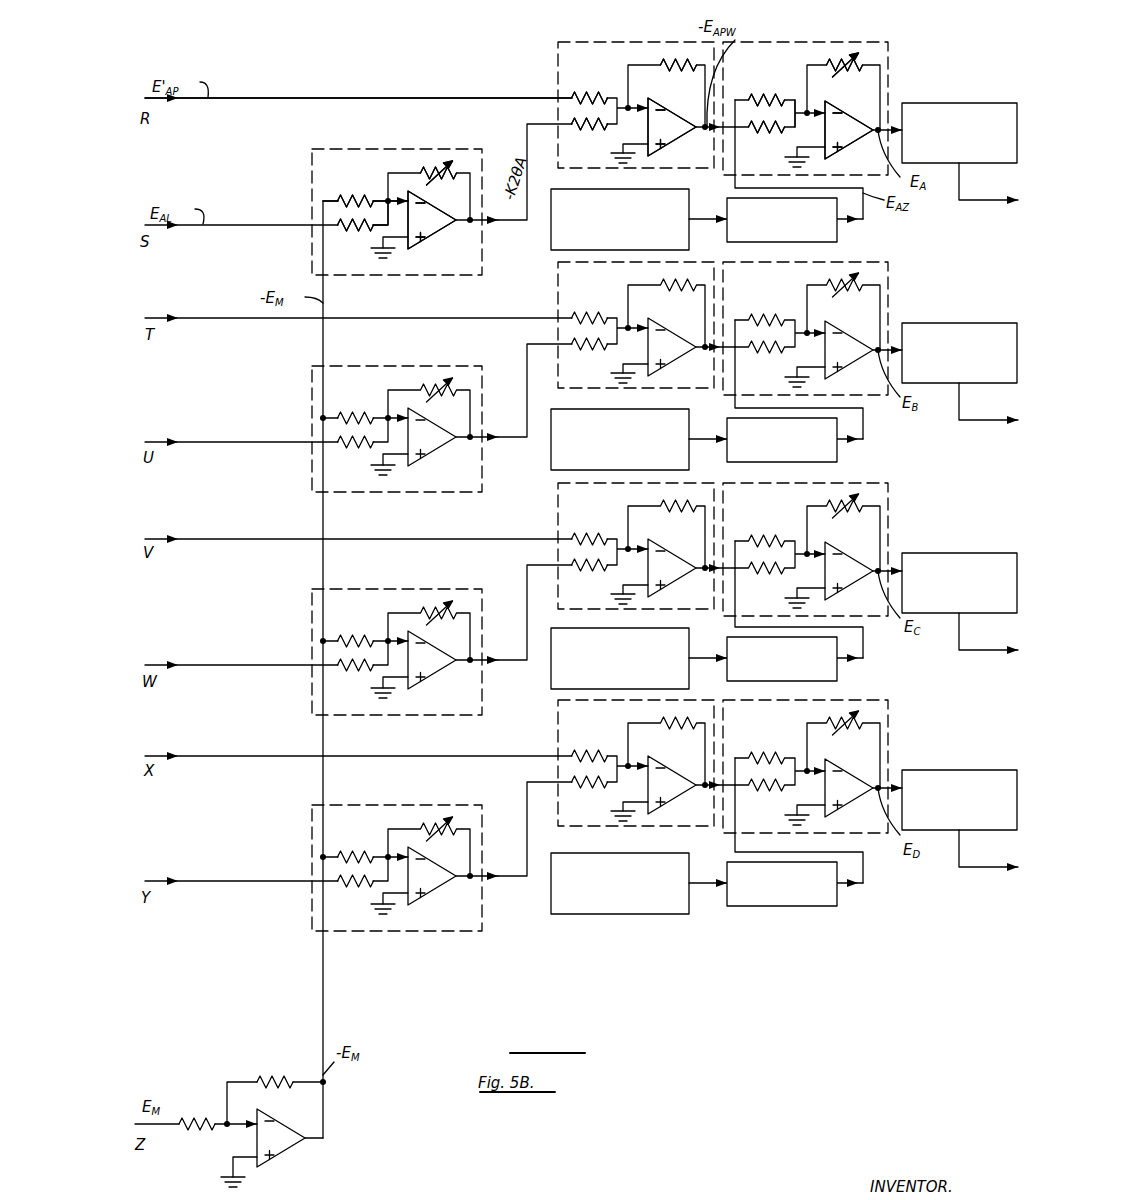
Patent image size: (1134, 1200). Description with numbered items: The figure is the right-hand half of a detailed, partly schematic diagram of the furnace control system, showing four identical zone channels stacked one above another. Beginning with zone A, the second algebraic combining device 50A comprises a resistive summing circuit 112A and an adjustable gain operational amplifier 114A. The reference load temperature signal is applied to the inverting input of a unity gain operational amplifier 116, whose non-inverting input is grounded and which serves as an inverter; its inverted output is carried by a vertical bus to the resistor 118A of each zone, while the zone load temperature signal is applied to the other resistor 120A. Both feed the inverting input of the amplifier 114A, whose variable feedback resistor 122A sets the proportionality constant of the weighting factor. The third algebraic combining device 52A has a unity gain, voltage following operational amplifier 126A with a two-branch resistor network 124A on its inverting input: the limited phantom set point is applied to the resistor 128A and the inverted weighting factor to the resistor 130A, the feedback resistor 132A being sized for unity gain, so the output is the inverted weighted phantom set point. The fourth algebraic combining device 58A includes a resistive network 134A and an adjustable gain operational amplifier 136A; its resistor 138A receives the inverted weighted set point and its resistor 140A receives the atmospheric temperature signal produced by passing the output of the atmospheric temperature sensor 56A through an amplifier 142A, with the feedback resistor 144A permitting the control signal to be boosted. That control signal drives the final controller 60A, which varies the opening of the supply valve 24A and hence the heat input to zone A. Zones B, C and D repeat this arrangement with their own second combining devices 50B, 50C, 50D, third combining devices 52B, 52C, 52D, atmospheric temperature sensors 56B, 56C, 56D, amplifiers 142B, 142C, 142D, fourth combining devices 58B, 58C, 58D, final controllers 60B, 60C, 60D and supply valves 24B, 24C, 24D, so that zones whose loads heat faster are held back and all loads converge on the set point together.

The second algebraic combining device 50A is at (363, 146).
The second algebraic combining device 50B is at (412, 363).
The second algebraic combining device 50C is at (416, 585).
The second algebraic combining device 50D is at (410, 801).
The third algebraic combining device 52A is at (605, 38).
The third algebraic combining device 52B is at (558, 306).
The third algebraic combining device 52C is at (557, 519).
The third algebraic combining device 52D is at (558, 734).
The atmospheric temperature sensor 56A is at (551, 233).
The atmospheric temperature sensor 56B is at (551, 455).
The atmospheric temperature sensor 56C is at (548, 682).
The atmospheric temperature sensor 56D is at (585, 914).
The fourth algebraic combining device 58A is at (865, 44).
The fourth algebraic combining device 58B is at (877, 302).
The fourth algebraic combining device 58C is at (877, 517).
The fourth algebraic combining device 58D is at (869, 742).
The final controller 60A is at (990, 86).
The final controller 60B is at (932, 318).
The final controller 60C is at (932, 544).
The final controller 60D is at (930, 767).
The supply valve 24A is at (969, 206).
The supply valve 24B is at (969, 426).
The supply valve 24C is at (969, 656).
The supply valve 24D is at (969, 873).
The amplifier 142A is at (837, 232).
The amplifier 142B is at (837, 452).
The amplifier 142C is at (837, 675).
The amplifier 142D is at (806, 907).
The resistive summing circuit 112A is at (336, 212).
The adjustable gain operational amplifier 114A is at (418, 239).
The unity gain operational amplifier 116 is at (290, 1144).
The resistor 118A is at (338, 199).
The resistor 120A is at (340, 229).
The variable feedback resistor 122A is at (439, 169).
The two-branch resistor network 124A is at (572, 105).
The unity gain voltage following operational amplifier 126A is at (662, 138).
The resistor 128A is at (583, 94).
The resistor 130A is at (597, 130).
The feedback resistor 132A is at (681, 64).
The resistive network 134A is at (790, 128).
The adjustable gain operational amplifier 136A is at (823, 138).
The resistor 138A is at (762, 132).
The resistor 140A is at (768, 98).
The feedback resistor 144A is at (840, 63).